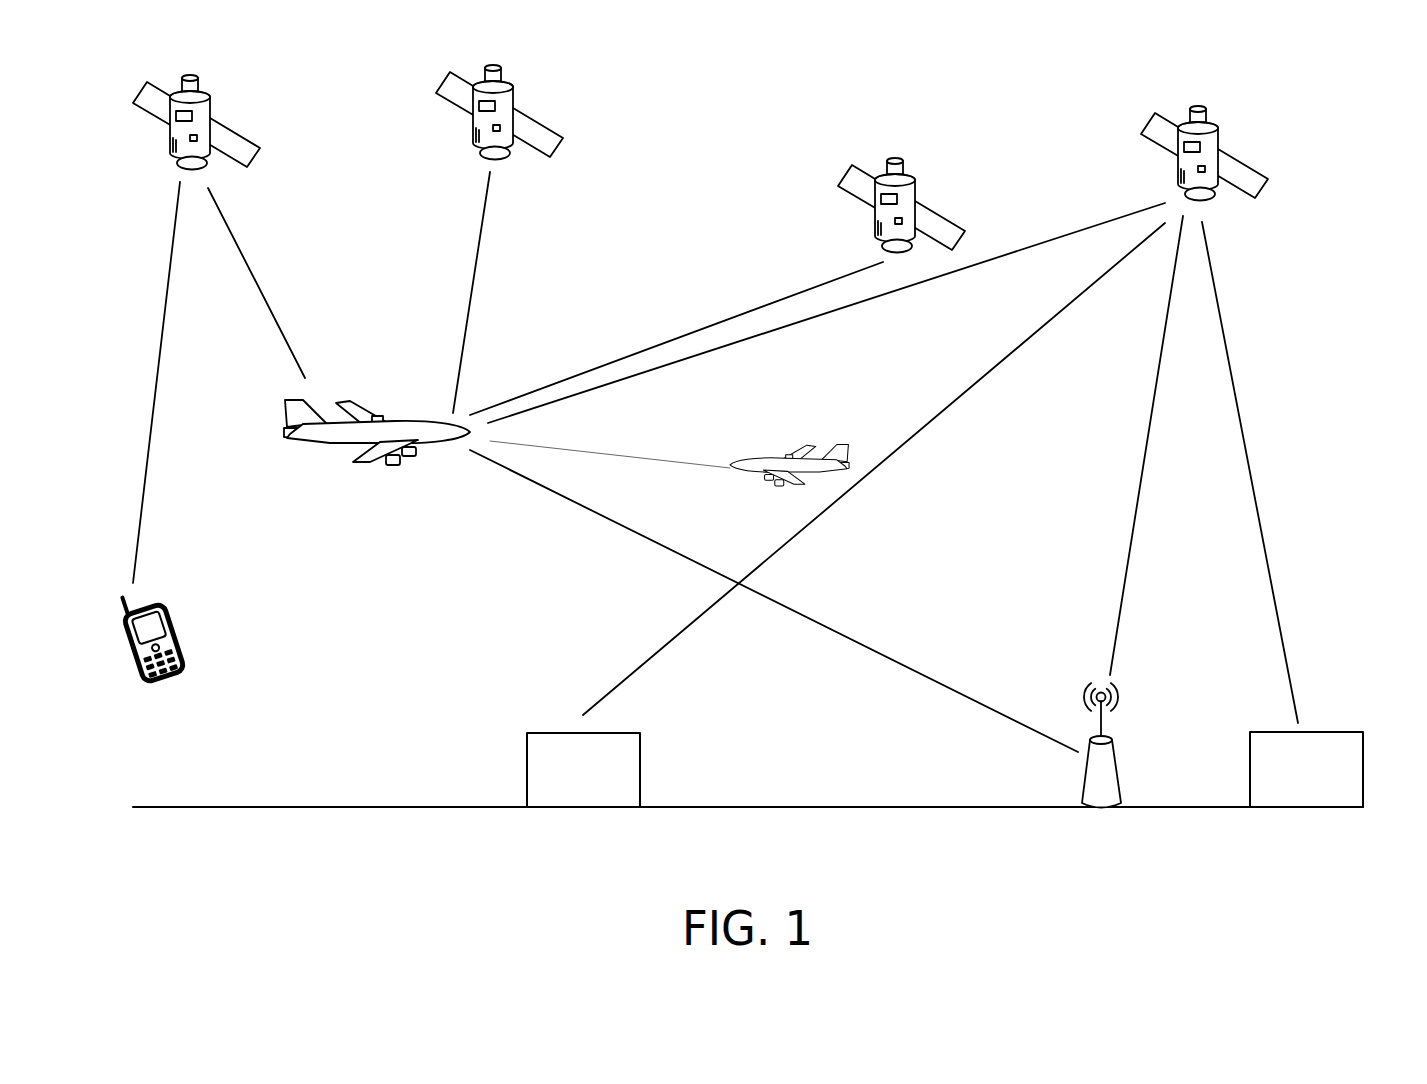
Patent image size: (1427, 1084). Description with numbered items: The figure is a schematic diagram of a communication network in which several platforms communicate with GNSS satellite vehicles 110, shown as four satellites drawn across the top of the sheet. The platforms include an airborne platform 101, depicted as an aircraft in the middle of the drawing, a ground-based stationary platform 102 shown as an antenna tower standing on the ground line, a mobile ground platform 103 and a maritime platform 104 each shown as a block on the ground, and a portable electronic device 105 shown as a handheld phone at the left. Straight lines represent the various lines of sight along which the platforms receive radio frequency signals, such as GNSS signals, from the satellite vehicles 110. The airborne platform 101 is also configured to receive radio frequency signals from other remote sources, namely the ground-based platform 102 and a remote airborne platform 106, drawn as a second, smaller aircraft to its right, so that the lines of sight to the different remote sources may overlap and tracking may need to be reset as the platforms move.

The airborne platform 101 is at (332, 467).
The ground-based platform 102 is at (1127, 772).
The mobile ground platform 103 is at (508, 771).
The maritime platform 104 is at (1330, 722).
The portable electronic device 105 is at (188, 622).
The remote airborne platform 106 is at (760, 443).
The satellite vehicle 110 is at (238, 107).